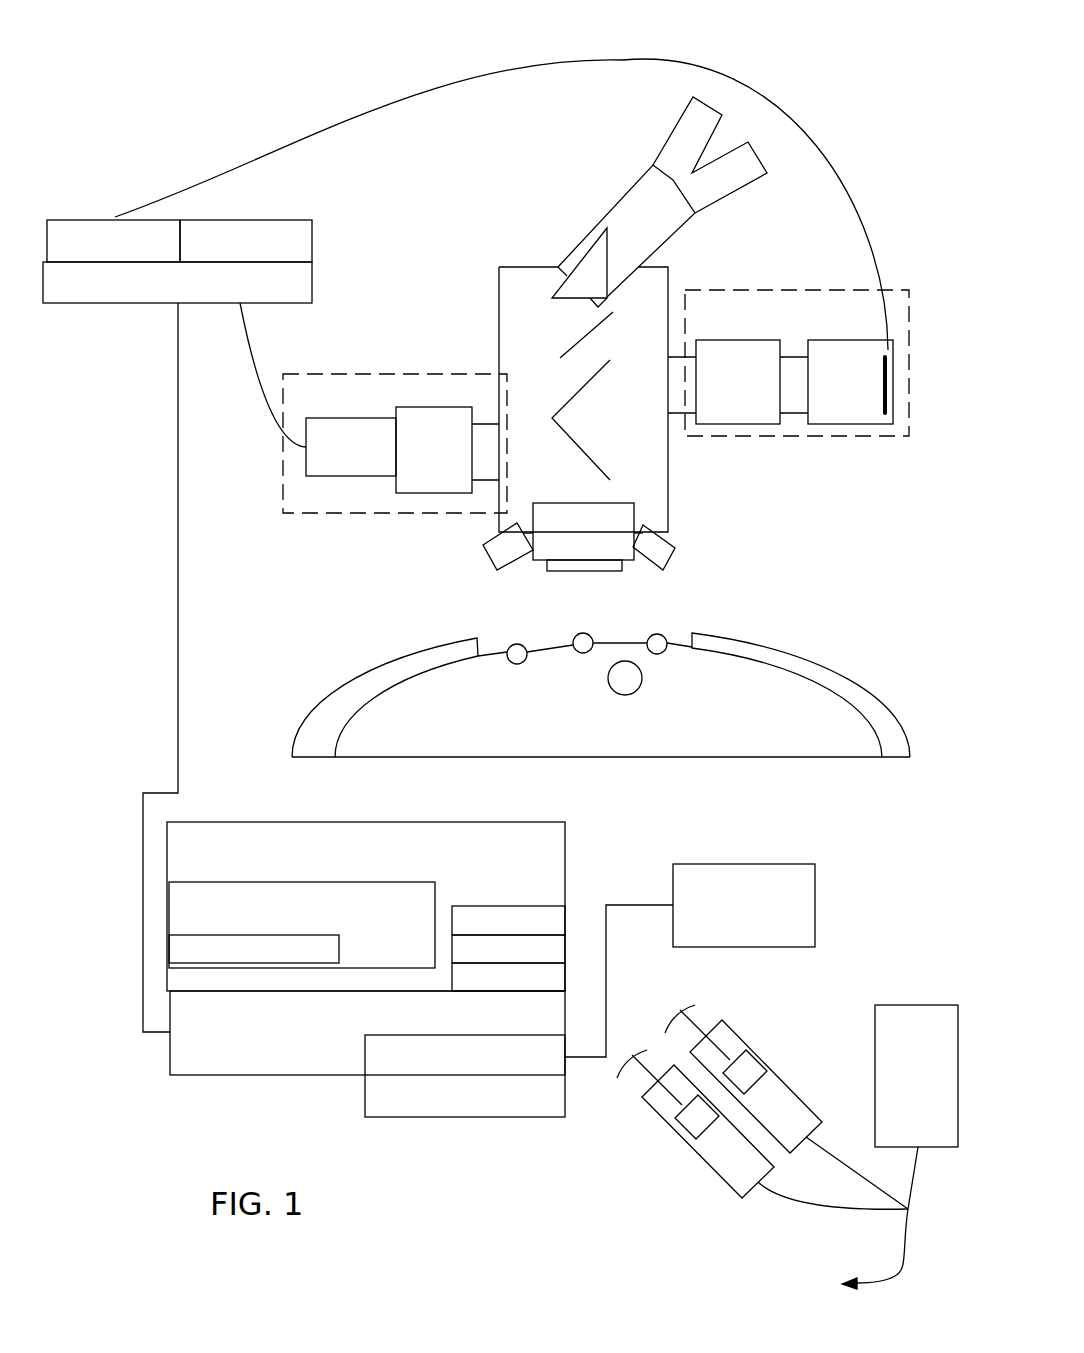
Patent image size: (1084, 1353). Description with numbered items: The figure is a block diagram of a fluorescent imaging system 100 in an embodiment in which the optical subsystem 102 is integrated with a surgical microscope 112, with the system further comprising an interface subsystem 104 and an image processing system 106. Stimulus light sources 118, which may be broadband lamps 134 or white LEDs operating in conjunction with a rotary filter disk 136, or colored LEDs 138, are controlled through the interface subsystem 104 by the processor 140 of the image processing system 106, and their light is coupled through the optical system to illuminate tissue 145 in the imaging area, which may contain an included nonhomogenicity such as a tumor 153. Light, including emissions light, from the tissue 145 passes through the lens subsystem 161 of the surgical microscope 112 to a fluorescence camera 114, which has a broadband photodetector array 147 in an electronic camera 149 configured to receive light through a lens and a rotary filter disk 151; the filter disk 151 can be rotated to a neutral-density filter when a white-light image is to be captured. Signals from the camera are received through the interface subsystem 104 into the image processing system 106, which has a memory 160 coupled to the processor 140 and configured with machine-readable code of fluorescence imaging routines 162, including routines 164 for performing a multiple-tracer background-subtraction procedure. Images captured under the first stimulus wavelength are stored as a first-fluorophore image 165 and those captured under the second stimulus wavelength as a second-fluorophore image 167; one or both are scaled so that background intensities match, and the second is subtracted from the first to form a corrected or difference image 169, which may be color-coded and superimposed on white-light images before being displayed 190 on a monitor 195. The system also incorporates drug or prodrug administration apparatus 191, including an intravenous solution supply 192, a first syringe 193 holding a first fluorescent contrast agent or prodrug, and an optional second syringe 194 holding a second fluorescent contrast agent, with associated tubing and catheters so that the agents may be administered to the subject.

The fluorescent imaging system 100 is at (876, 45).
The optical subsystem 102 is at (563, 314).
The interface subsystem 104 is at (278, 195).
The image processing system 106 is at (426, 959).
The surgical microscope 112 is at (648, 462).
The fluorescence camera 114 is at (757, 329).
The stimulus light sources 118 is at (361, 401).
The broadband lamps 134 is at (371, 457).
The rotary filter disk 136 is at (454, 457).
The colored LEDs 138 is at (652, 562).
The processor 140 is at (441, 1031).
The tissue 145 is at (612, 729).
The broadband photodetector array 147 is at (885, 357).
The electronic camera 149 is at (870, 394).
The rotary filter disk 151 is at (758, 394).
The tumor 153 is at (627, 677).
The memory 160 is at (434, 863).
The lens subsystem 161 is at (603, 542).
The fluorescence imaging routines 162 is at (227, 909).
The multiple-tracer background-subtraction routines 164 is at (276, 961).
The first-fluorophore image 165 is at (528, 932).
The second-fluorophore image 167 is at (528, 961).
The difference image 169 is at (528, 988).
The display 190 is at (527, 1070).
The drug or prodrug administration apparatus 191 is at (787, 1122).
The intravenous solution supply 192 is at (898, 1087).
The first syringe 193 is at (731, 1155).
The second syringe 194 is at (770, 1112).
The monitor 195 is at (725, 932).